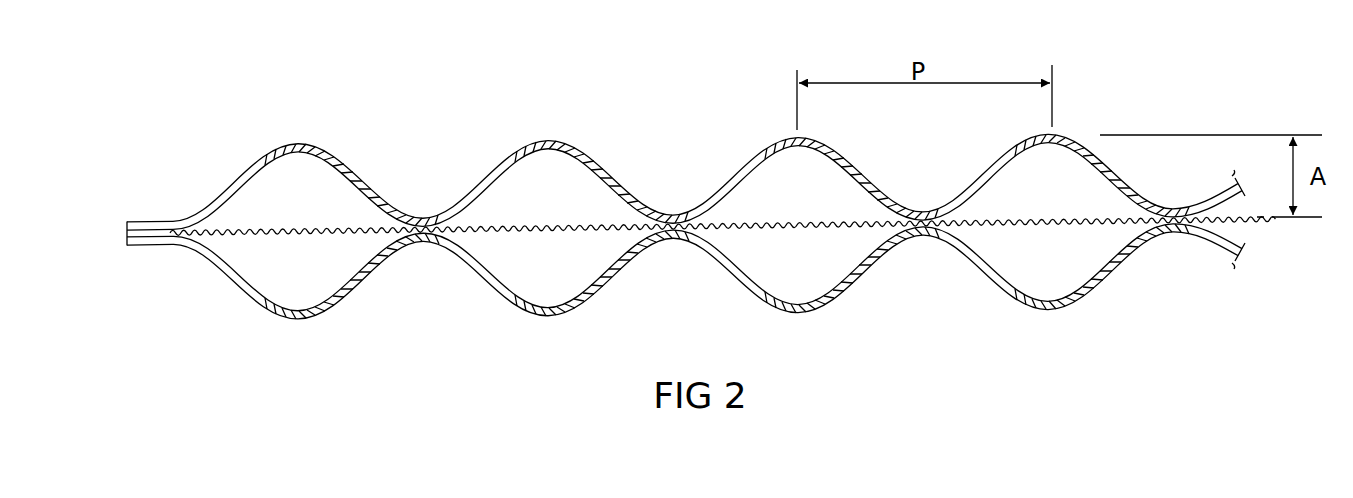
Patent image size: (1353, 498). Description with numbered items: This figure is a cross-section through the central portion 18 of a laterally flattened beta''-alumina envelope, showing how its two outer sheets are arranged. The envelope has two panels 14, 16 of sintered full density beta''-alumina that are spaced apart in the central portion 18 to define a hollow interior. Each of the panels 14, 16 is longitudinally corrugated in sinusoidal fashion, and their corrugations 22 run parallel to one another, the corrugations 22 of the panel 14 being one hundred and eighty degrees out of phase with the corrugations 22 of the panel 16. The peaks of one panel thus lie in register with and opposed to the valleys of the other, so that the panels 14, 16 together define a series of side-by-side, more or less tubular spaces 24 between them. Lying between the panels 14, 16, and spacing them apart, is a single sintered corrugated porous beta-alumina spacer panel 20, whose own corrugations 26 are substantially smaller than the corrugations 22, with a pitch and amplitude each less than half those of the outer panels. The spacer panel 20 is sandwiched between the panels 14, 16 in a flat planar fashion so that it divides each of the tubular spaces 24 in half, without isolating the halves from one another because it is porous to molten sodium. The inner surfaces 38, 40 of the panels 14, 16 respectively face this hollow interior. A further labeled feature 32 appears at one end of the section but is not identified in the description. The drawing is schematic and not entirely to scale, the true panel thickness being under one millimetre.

The panel 14 is at (1083, 147).
The panel 16 is at (1088, 288).
The central portion 18 is at (1173, 111).
The spacer panel 20 is at (850, 222).
The corrugations 22 is at (470, 168).
The tubular spaces 24 is at (1027, 247).
The corrugations 26 is at (273, 225).
The end portion 32 is at (117, 243).
The inner surface 38 is at (583, 163).
The inner surface 40 is at (557, 296).